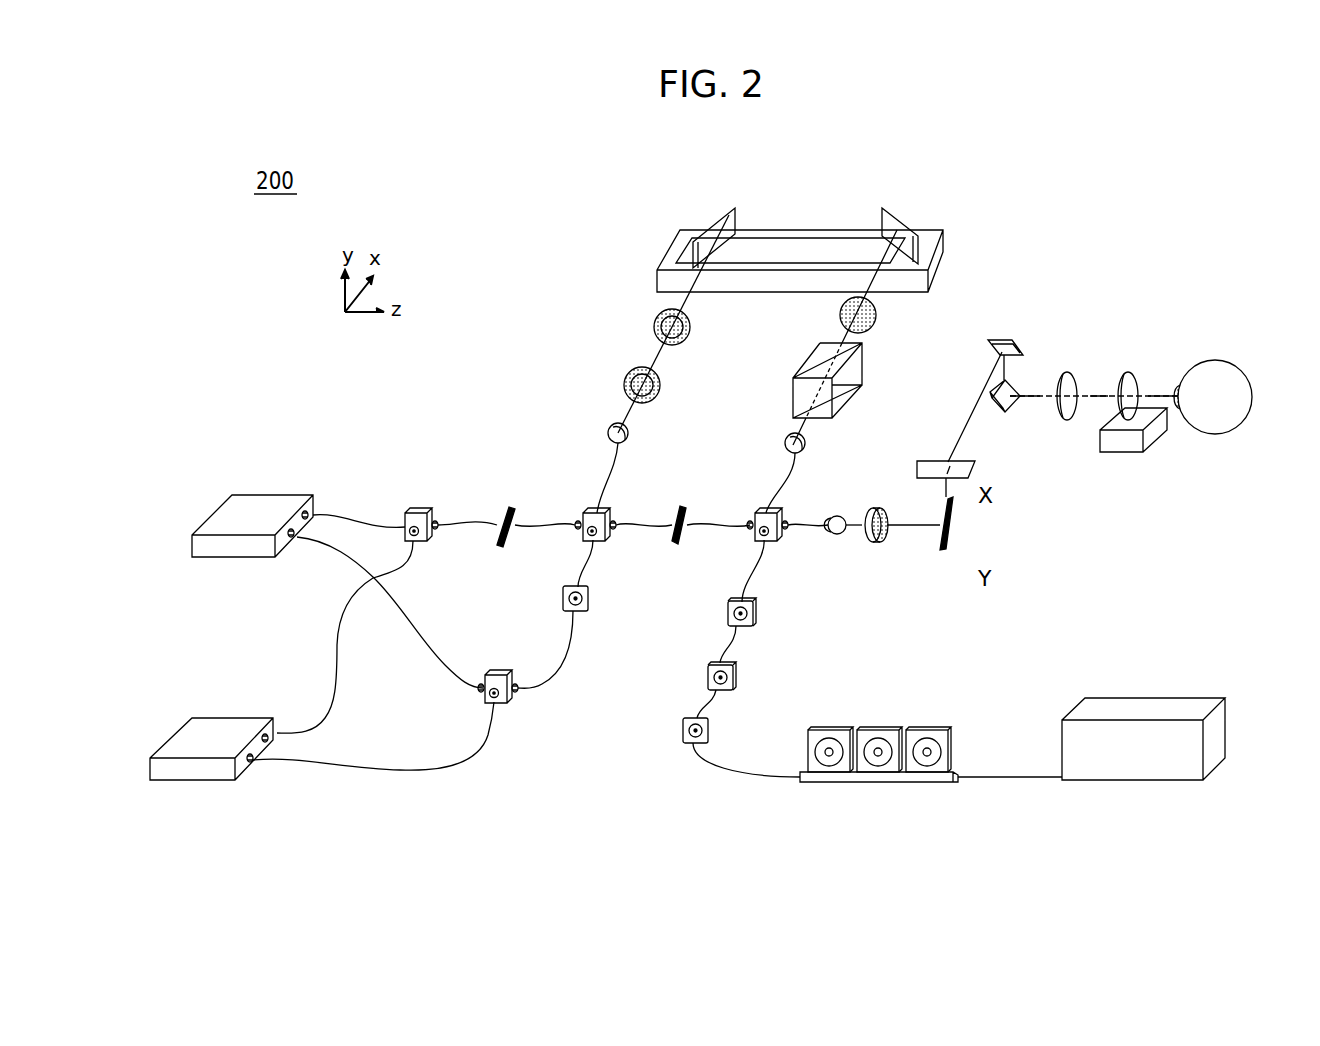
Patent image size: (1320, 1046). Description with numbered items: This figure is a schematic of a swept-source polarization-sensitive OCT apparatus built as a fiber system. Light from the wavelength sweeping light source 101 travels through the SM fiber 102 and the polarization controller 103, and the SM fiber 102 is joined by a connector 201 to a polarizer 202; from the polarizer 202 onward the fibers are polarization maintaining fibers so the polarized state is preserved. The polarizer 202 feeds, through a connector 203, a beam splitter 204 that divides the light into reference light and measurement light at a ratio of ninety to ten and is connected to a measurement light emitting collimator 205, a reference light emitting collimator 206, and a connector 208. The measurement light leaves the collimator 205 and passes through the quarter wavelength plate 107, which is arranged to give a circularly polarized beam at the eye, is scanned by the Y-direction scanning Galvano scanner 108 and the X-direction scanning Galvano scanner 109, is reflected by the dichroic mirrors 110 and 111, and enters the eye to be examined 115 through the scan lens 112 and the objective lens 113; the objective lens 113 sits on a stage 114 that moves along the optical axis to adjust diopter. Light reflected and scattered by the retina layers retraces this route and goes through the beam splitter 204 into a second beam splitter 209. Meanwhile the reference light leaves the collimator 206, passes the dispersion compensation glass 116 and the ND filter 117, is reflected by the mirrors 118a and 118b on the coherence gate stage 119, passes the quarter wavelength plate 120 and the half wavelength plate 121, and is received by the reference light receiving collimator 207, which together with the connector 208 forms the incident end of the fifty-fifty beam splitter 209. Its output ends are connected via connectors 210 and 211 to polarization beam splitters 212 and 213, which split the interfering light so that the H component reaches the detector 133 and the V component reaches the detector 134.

The light source 101 is at (1138, 782).
The SM fiber 102 is at (1030, 780).
The polarization controller 103 is at (872, 783).
The 1/4 wavelength plate 107 is at (875, 545).
The Y-direction scanning Galvano scanner 108 is at (944, 552).
The X-direction scanning Galvano scanner 109 is at (928, 460).
The dichroic mirror 110 is at (1004, 340).
The dichroic mirror 111 is at (1008, 412).
The scan lens 112 is at (1064, 372).
The objective lens 113 is at (1125, 372).
The stage 114 is at (1124, 448).
The eye to be examined 115 is at (1200, 368).
The dispersion compensation glass 116 is at (840, 412).
The ND filter 117 is at (875, 322).
The mirror 118a is at (895, 215).
The mirror 118b is at (730, 220).
The coherence gate stage 119 is at (657, 282).
The 1/4 wavelength plate 120 is at (654, 328).
The 1/2 wavelength plate 121 is at (624, 386).
The detector 133 is at (262, 495).
The detector 134 is at (221, 718).
The connector 201 is at (708, 735).
The polarizer 202 is at (733, 681).
The connector 203 is at (753, 620).
The beam splitter 204 is at (758, 512).
The measurement light emitting collimator 205 is at (830, 535).
The reference light emitting collimator 206 is at (805, 455).
The reference light receiving collimator 207 is at (608, 433).
The connector 208 is at (684, 508).
The beam splitter 209 is at (588, 512).
The connector 210 is at (506, 507).
The connector 211 is at (588, 598).
The polarization beam splitter 212 is at (412, 512).
The polarization beam splitter 213 is at (490, 675).